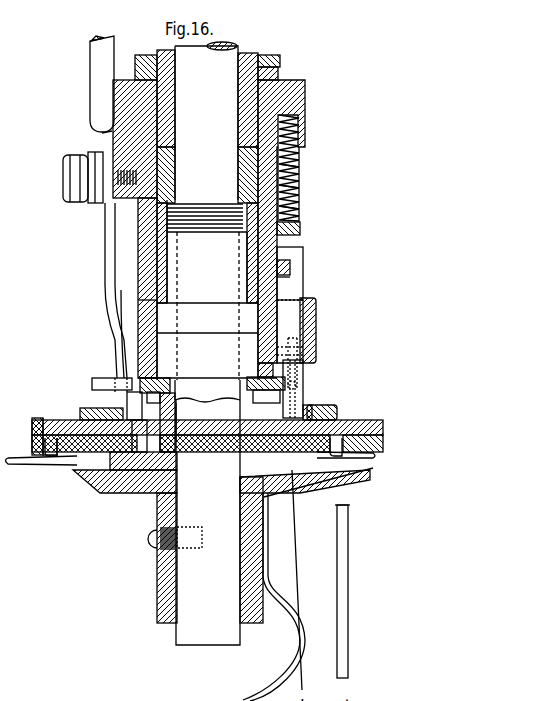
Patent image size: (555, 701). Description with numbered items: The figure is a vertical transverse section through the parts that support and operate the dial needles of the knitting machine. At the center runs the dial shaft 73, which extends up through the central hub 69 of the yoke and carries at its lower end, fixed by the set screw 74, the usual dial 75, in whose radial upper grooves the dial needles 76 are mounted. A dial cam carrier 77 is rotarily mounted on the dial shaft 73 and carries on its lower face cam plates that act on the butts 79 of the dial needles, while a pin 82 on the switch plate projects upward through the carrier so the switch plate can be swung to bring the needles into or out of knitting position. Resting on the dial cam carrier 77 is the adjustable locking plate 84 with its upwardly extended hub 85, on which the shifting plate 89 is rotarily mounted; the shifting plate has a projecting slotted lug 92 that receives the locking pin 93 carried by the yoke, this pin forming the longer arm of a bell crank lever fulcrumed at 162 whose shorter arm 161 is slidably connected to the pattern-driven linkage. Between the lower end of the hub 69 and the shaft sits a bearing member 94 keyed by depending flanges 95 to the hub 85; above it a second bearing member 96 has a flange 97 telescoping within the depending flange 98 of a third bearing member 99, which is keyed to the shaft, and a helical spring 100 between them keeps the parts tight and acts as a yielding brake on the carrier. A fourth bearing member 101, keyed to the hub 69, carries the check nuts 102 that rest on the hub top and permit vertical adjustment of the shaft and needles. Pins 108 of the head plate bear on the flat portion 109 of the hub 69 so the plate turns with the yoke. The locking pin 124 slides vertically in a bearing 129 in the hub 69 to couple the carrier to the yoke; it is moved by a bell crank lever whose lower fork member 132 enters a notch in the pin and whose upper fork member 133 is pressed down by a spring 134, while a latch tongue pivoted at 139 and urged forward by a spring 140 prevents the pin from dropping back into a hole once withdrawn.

The central hub 69 is at (307, 102).
The dial shaft 73 is at (224, 635).
The set screw 74 is at (152, 548).
The dial 75 is at (100, 492).
The dial needles 76 is at (23, 468).
The dial cam carrier 77 is at (373, 418).
The butts 79 is at (43, 420).
The pin 82 is at (138, 398).
The adjustable locking plate 84 is at (328, 415).
The hub 85 is at (193, 400).
The shifting plate 89 is at (303, 382).
The slotted lug 92 is at (97, 378).
The locking pin 93 is at (116, 313).
The bearing member 94 is at (177, 357).
The depending flanges 95 is at (205, 367).
The second bearing member 96 is at (165, 312).
The flange 97 is at (180, 247).
The depending flange 98 is at (300, 210).
The third bearing member 99 is at (302, 155).
The helical spring 100 is at (298, 185).
The fourth bearing member 101 is at (252, 103).
The check nuts 102 is at (280, 62).
The pins 108 is at (90, 75).
The flat portion 109 is at (113, 132).
The locking pin 124 is at (300, 280).
The bearing 129 is at (313, 303).
The lower fork member 132 is at (287, 273).
The upper fork member 133 is at (302, 230).
The spring 134 is at (297, 170).
The pivot 139 is at (315, 332).
The spring 140 is at (318, 367).
The shorter arm 161 is at (100, 204).
The fulcrum 162 is at (66, 173).